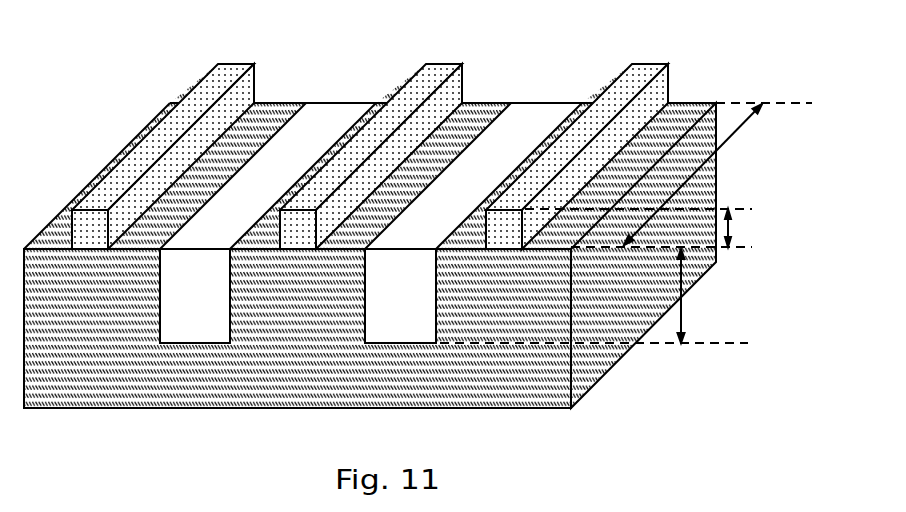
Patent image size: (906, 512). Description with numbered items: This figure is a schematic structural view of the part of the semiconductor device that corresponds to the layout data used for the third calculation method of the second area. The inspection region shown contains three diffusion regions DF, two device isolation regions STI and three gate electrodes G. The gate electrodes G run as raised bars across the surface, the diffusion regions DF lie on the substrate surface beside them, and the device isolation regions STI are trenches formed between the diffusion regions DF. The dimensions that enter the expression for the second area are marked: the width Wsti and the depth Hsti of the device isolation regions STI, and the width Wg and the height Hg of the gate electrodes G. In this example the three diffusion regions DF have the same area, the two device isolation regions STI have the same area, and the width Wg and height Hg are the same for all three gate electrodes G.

The gate electrode G is at (229, 72).
The diffusion region DF is at (272, 106).
The device isolation region STI is at (371, 223).
The width of the device isolation region Wsti is at (691, 175).
The width of the gate electrode Wg is at (670, 181).
The height of the gate electrode Hg is at (743, 228).
The depth of the device isolation region Hsti is at (594, 296).